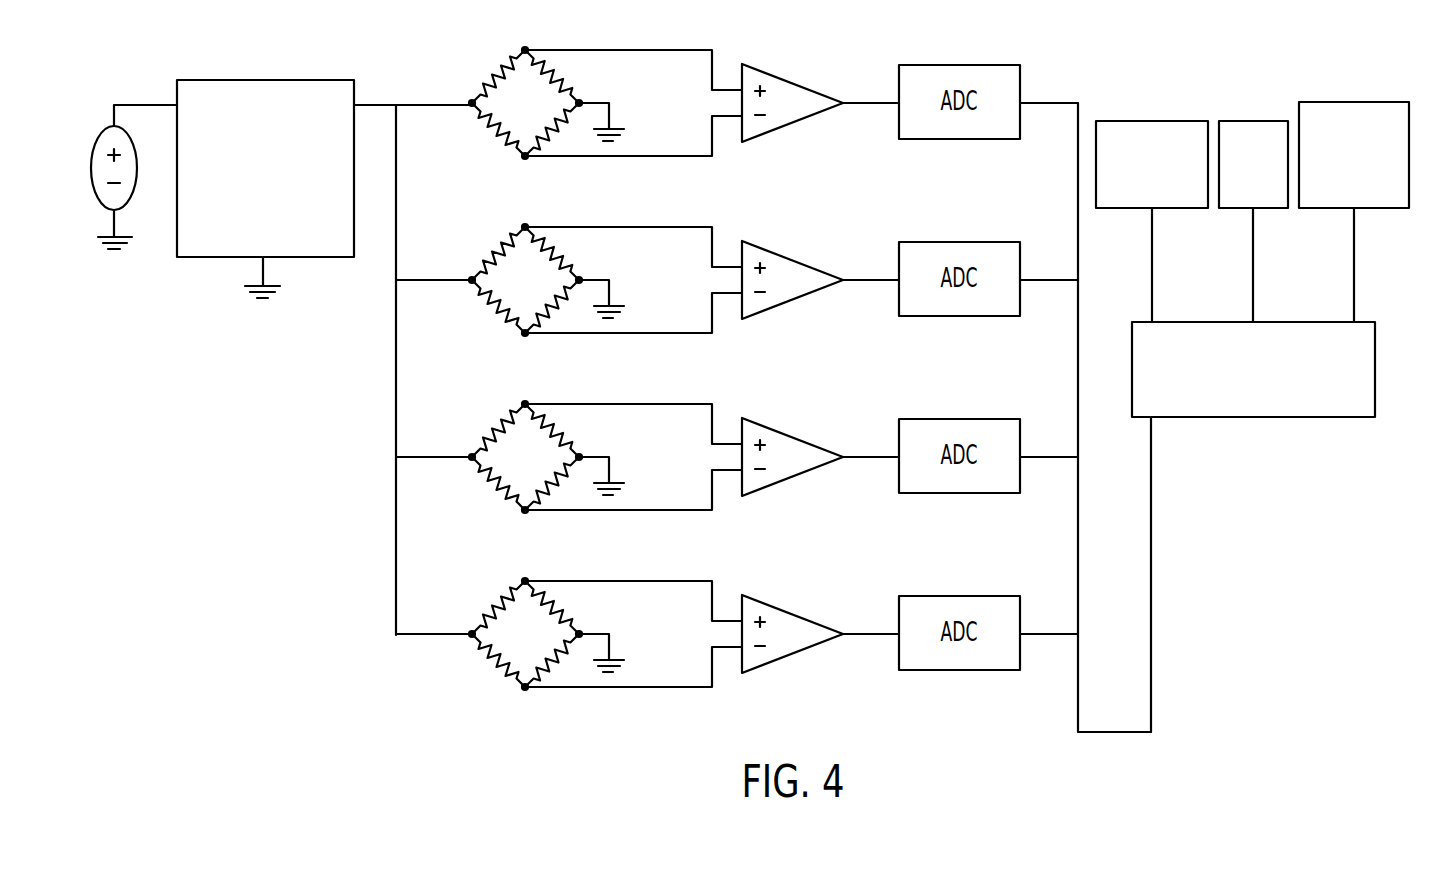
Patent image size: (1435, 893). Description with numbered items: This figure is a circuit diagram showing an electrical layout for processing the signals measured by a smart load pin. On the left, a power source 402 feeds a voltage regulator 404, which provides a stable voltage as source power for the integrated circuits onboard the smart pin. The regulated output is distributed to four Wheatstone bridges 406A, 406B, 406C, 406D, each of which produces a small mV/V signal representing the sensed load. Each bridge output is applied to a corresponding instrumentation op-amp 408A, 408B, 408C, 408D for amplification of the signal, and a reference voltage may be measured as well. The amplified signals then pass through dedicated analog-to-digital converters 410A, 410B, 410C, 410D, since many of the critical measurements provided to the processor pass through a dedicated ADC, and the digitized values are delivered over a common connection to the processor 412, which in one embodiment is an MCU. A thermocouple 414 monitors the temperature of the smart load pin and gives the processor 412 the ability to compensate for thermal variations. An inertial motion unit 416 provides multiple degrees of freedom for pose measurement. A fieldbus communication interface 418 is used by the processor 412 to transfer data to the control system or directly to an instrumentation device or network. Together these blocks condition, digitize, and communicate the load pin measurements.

The power source 402 is at (102, 128).
The voltage regulator 404 is at (195, 80).
The Wheatstone bridge 406A is at (509, 142).
The Wheatstone bridge 406B is at (509, 319).
The Wheatstone bridge 406C is at (509, 496).
The Wheatstone bridge 406D is at (509, 673).
The op-amp 408A is at (752, 63).
The op-amp 408B is at (752, 240).
The op-amp 408C is at (752, 417).
The op-amp 408D is at (752, 594).
The analog to digital converter 410A is at (933, 63).
The analog to digital converter 410B is at (933, 240).
The analog to digital converter 410C is at (933, 417).
The analog to digital converter 410D is at (933, 594).
The processor 412 is at (1270, 418).
The thermocouple 414 is at (1150, 121).
The inertial motion unit 416 is at (1255, 121).
The fieldbus communication interface 418 is at (1342, 102).